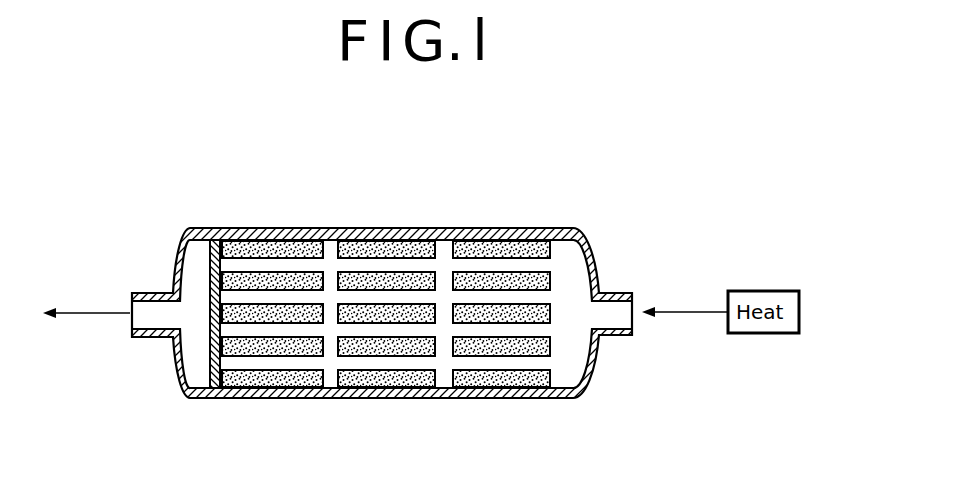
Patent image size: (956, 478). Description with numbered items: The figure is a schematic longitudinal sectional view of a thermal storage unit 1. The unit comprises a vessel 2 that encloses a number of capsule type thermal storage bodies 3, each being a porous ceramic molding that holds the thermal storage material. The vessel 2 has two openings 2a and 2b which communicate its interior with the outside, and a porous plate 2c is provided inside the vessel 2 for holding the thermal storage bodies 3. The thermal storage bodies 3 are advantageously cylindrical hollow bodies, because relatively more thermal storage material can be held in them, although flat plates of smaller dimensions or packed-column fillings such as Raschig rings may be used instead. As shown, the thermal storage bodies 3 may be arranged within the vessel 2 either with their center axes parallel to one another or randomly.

The thermal storage unit 1 is at (332, 214).
The vessel 2 is at (415, 228).
The opening 2a is at (610, 312).
The opening 2b is at (153, 315).
The porous plate 2c is at (210, 350).
The thermal storage body 3 is at (518, 241).